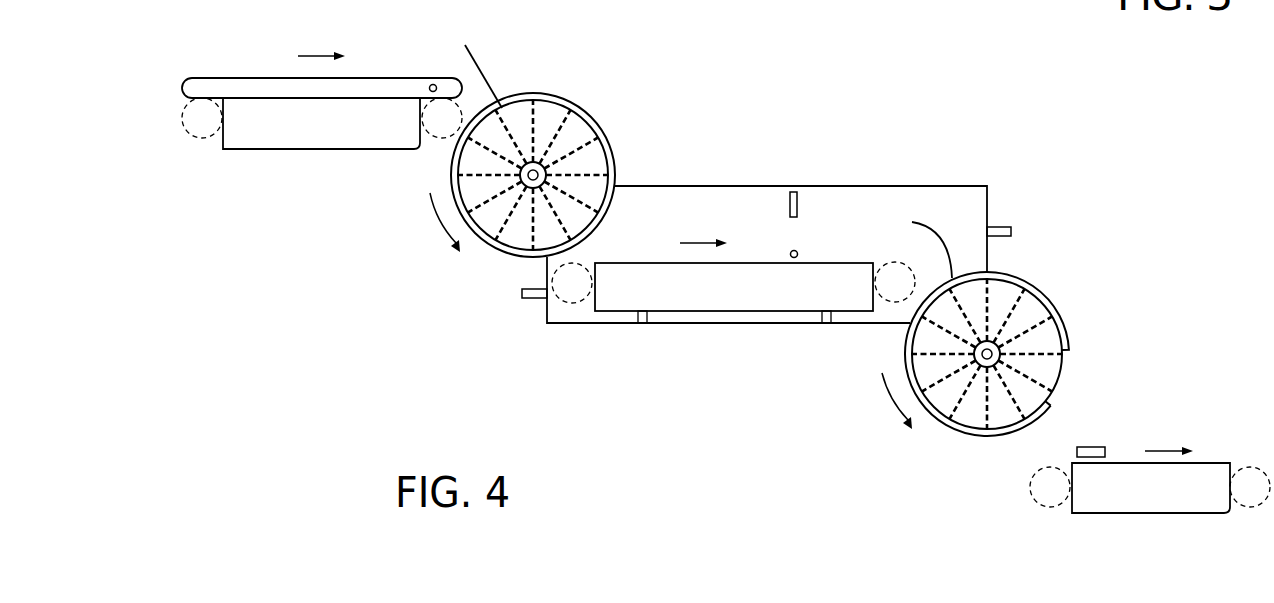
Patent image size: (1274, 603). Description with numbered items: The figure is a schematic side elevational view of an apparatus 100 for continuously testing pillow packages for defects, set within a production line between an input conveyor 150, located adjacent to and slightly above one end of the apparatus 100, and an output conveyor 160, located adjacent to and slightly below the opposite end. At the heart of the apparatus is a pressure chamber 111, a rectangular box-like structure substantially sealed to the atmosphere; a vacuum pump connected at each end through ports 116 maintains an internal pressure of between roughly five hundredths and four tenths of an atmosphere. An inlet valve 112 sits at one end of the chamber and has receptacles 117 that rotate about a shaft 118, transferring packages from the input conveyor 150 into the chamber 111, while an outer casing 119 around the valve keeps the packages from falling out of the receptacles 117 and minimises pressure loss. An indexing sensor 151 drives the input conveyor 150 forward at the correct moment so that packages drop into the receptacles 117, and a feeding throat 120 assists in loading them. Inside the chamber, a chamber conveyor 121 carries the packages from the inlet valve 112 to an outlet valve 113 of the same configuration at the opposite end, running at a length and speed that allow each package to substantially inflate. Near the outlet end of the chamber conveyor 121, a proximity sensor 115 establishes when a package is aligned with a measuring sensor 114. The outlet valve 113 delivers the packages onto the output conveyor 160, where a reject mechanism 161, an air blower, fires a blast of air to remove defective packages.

The apparatus 100 is at (912, 152).
The pressure chamber 111 is at (960, 210).
The inlet valve 112 is at (568, 90).
The outlet valve 113 is at (1066, 304).
The measuring sensor 114 is at (789, 203).
The proximity sensor 115 is at (798, 252).
The ports 116 is at (523, 293).
The receptacles 117 is at (583, 162).
The shaft 118 is at (528, 175).
The outer casing 119 is at (617, 174).
The feeding throat 120 is at (487, 82).
The chamber conveyor 121 is at (725, 288).
The input conveyor 150 is at (268, 70).
The indexing sensor 151 is at (432, 84).
The output conveyor 160 is at (1170, 504).
The reject mechanism 161 is at (1112, 438).